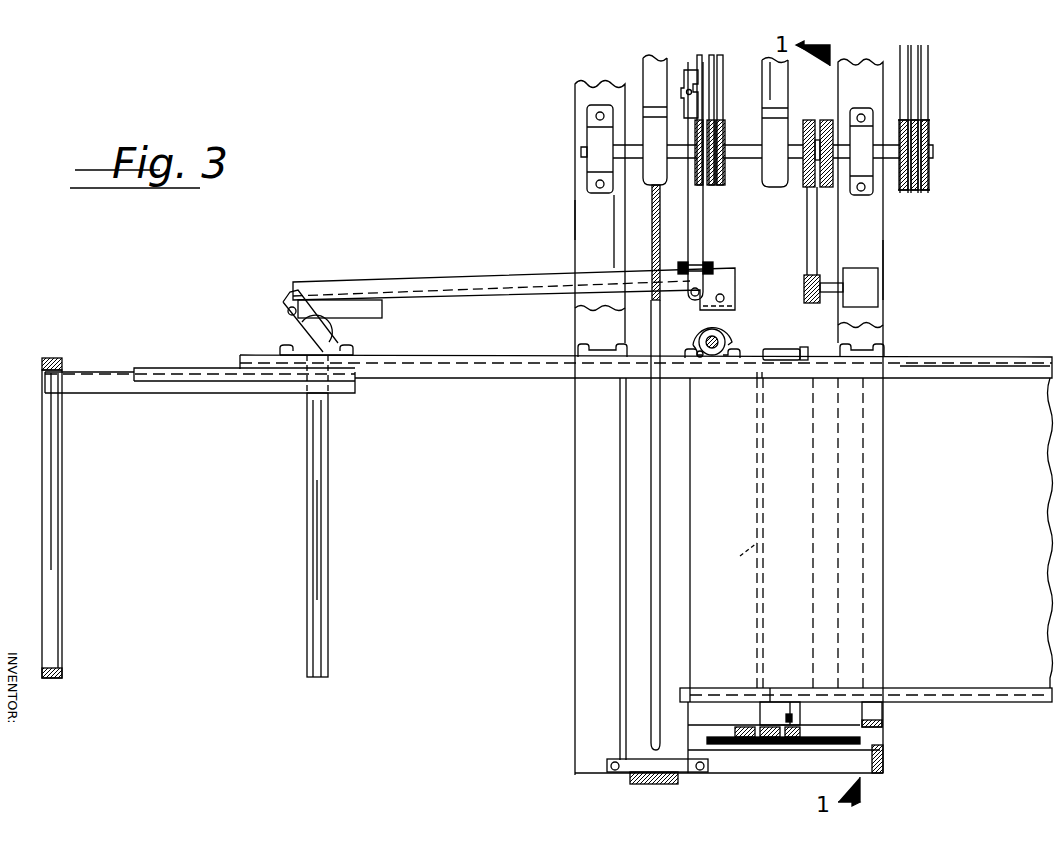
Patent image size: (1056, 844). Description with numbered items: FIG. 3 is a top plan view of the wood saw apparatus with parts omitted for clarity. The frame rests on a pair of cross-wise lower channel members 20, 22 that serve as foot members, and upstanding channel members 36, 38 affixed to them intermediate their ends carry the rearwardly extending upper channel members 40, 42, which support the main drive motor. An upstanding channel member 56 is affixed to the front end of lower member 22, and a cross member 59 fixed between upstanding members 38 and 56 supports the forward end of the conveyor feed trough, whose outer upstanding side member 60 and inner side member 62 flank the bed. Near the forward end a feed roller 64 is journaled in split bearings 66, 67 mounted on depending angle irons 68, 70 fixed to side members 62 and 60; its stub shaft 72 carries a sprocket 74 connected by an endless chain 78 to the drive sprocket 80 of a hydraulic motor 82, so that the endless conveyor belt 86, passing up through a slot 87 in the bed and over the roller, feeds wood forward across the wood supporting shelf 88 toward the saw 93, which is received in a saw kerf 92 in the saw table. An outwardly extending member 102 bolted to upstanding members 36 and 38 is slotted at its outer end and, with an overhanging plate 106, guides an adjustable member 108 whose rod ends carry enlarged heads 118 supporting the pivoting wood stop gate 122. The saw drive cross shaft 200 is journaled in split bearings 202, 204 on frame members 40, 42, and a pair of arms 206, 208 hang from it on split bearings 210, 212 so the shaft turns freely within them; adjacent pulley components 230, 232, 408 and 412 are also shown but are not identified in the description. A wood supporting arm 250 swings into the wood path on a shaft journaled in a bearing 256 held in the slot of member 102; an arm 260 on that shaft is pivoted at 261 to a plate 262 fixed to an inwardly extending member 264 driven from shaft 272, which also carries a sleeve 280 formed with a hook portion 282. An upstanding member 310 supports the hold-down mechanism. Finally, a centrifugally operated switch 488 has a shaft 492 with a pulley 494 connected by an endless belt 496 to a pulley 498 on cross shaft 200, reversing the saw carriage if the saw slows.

The lower channel member 20 is at (576, 325).
The lower channel member 22 is at (880, 312).
The upstanding channel member 36 is at (626, 352).
The upstanding channel member 38 is at (882, 353).
The channel member 40 is at (880, 235).
The channel member 42 is at (578, 212).
The upstanding channel member 56 is at (885, 766).
The cross member 59 is at (878, 500).
The outer upstanding side member 60 is at (1000, 702).
The inner side member 62 is at (990, 366).
The feed roller 64 is at (793, 533).
The split bearing 66 is at (778, 688).
The split bearing 67 is at (786, 353).
The depending angle iron 68 is at (806, 356).
The depending angle iron 70 is at (800, 712).
The stub shaft 72 is at (795, 719).
The sprocket 74 is at (790, 745).
The endless chain 78 is at (768, 745).
The drive sprocket 80 is at (742, 745).
The hydraulic motor 82 is at (726, 711).
The endless conveyor belt 86 is at (1019, 533).
The slot 87 is at (736, 557).
The wood supporting shelf 88 is at (735, 533).
The saw kerf 92 is at (660, 570).
The saw 93 is at (658, 255).
The outwardly extending member 102 is at (489, 378).
The overhanging plate 106 is at (178, 368).
The adjustable member 108 is at (104, 372).
The enlarged head 118 is at (42, 362).
The wood stop gate 122 is at (63, 600).
The cross shaft 200 is at (743, 160).
The split bearing 202 is at (868, 175).
The split bearing 204 is at (598, 157).
The arm 206 is at (783, 93).
The arm 208 is at (648, 87).
The split bearing 210 is at (778, 188).
The split bearing 212 is at (660, 182).
The pulley 230 is at (728, 140).
The bracket 232 is at (722, 106).
The wood supporting arm 250 is at (329, 535).
The bearing 256 is at (338, 333).
The arm 260 is at (282, 330).
The pivotal connection 261 is at (296, 303).
The plate 262 is at (386, 302).
The inwardly extending member 264 is at (472, 286).
The shaft 272 is at (730, 345).
The sleeve 280 is at (725, 338).
The hook portion 282 is at (698, 338).
The upstanding extending member 310 is at (672, 782).
The pulley 408 is at (824, 190).
The hub 412 is at (832, 122).
The centrifugally operated switch 488 is at (873, 281).
The shaft 492 is at (830, 283).
The pulley 494 is at (805, 292).
The endless belt 496 is at (808, 243).
The pulley 498 is at (806, 122).